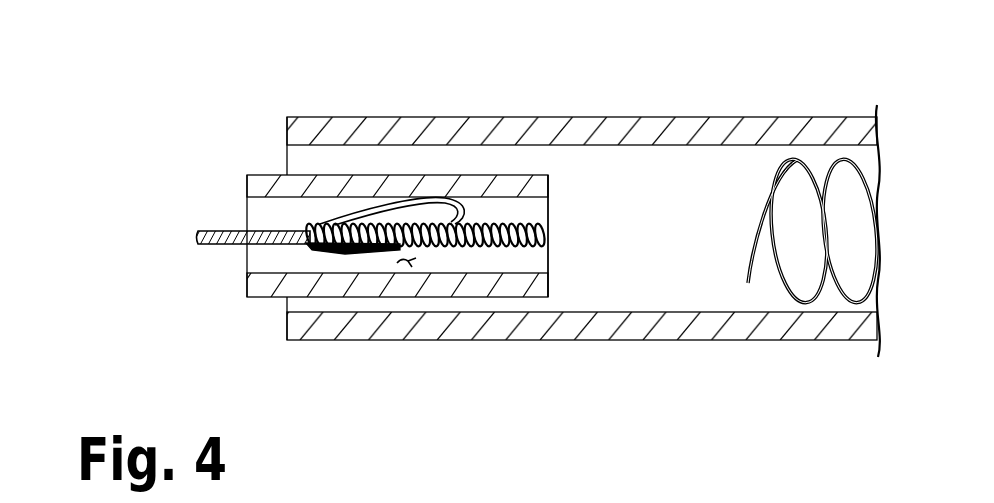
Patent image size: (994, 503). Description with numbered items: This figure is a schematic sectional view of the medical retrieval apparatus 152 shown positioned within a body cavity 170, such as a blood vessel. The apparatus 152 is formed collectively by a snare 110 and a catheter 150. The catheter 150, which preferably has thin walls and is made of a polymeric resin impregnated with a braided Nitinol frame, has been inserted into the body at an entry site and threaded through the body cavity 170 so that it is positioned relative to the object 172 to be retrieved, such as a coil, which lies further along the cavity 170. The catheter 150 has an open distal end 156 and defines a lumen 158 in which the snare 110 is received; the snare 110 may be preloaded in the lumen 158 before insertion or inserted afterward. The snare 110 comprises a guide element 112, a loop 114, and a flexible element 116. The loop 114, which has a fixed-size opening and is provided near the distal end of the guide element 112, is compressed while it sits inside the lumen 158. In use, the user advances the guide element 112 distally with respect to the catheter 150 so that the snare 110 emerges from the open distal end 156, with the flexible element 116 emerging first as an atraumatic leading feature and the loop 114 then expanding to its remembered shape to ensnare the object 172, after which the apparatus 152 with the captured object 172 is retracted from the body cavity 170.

The snare 110 is at (335, 252).
The guide element 112 is at (223, 228).
The loop 114 is at (367, 205).
The flexible element 116 is at (507, 223).
The catheter 150 is at (477, 176).
The medical retrieval apparatus 152 is at (437, 175).
The open distal end 156 is at (542, 298).
The lumen 158 is at (410, 266).
The body cavity 170 is at (685, 117).
The object 172 is at (803, 303).